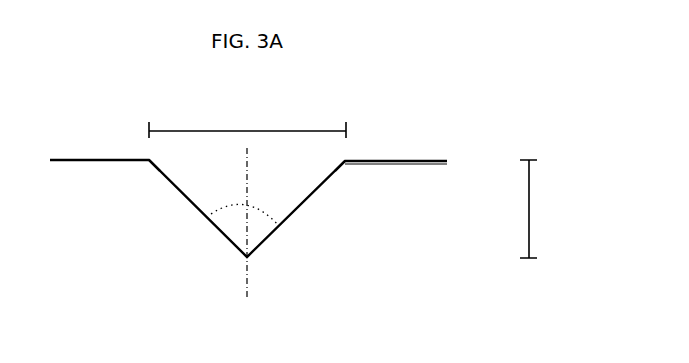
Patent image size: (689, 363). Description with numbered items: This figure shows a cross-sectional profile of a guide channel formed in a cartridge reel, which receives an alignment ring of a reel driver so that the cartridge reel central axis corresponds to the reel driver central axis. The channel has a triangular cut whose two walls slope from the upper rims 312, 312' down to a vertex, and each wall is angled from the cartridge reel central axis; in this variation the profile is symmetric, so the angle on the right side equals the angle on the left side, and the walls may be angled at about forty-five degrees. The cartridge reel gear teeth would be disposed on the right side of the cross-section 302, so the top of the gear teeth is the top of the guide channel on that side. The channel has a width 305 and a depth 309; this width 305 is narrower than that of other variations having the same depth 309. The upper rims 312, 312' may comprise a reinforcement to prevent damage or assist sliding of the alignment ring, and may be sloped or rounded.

The right side of the cross-section 302 is at (400, 145).
The width 305 is at (247, 119).
The depth 309 is at (551, 209).
The upper rim 312 is at (121, 195).
The upper rim 312' is at (373, 196).